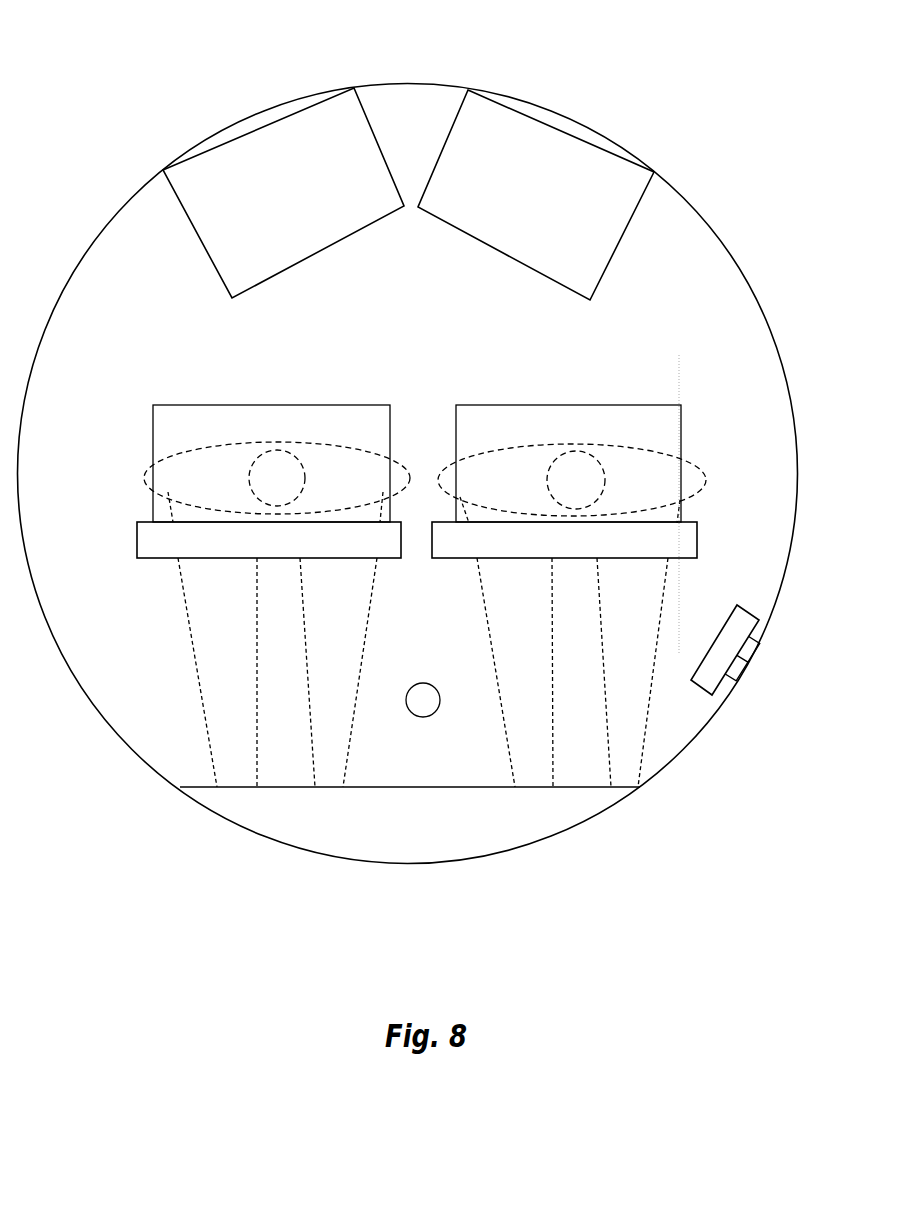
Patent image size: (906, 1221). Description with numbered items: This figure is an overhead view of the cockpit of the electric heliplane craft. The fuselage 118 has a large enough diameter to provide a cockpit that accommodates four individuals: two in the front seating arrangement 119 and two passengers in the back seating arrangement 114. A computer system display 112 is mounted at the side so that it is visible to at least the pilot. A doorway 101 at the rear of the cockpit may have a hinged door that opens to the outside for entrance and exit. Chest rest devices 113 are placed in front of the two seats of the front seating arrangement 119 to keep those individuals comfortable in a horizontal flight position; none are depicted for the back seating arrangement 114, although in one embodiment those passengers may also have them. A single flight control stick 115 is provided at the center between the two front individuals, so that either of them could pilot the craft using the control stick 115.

The doorway 101 is at (410, 788).
The computer system display 112 is at (749, 640).
The chest rest device 113 is at (137, 537).
The back seating arrangement 114 is at (620, 241).
The flight control stick 115 is at (423, 717).
The fuselage 118 is at (116, 213).
The front seating arrangement 119 is at (268, 405).